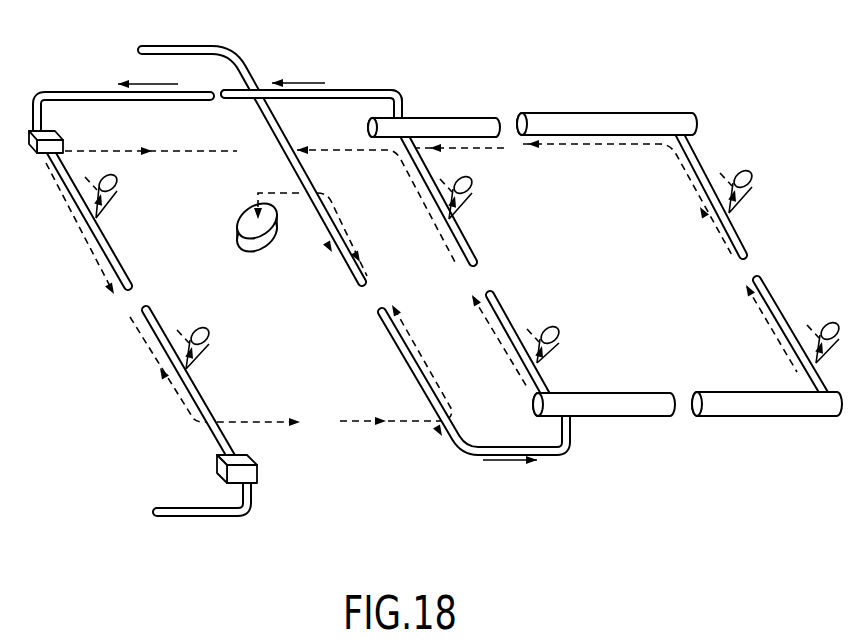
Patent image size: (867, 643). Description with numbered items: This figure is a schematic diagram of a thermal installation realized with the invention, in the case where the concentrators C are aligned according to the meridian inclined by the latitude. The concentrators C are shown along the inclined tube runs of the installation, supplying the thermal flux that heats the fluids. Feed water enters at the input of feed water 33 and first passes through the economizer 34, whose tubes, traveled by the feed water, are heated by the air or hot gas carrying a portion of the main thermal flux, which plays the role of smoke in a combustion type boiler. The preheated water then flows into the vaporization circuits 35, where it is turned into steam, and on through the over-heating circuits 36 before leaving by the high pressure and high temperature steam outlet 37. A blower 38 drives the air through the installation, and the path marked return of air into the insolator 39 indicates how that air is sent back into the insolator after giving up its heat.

The input of feed water 33 is at (140, 50).
The economizer 34 is at (381, 309).
The vaporization circuits 35 is at (603, 292).
The over-heating circuits 36 is at (142, 309).
The high pressure and high temperature steam outlet 37 is at (140, 513).
The blower 38 is at (275, 250).
The return of air into the insolator 39 is at (270, 252).
The concentrators C is at (118, 181).